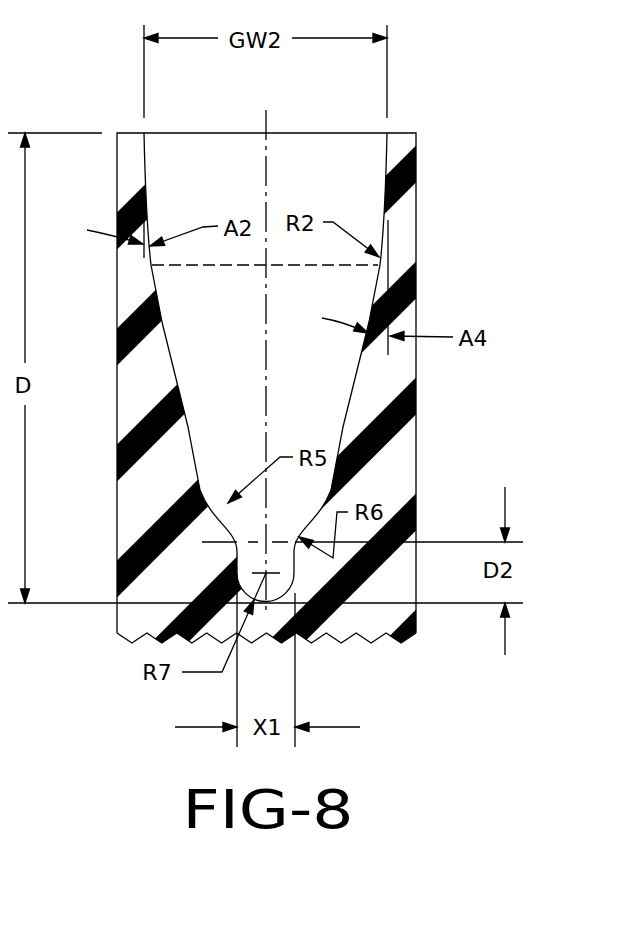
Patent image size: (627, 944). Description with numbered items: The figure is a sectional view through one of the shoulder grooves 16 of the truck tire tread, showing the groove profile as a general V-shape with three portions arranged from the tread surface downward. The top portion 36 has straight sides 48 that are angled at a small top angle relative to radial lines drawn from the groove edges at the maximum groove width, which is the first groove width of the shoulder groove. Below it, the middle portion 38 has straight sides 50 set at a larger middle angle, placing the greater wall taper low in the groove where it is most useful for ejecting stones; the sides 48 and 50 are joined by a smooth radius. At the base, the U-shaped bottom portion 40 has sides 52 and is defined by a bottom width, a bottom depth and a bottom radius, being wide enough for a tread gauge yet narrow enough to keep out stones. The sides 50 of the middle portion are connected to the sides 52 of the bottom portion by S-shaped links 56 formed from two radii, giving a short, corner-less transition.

The shoulder groove 16 is at (205, 118).
The top portion 36 is at (447, 210).
The middle portion 38 is at (448, 408).
The bottom portion 40 is at (537, 573).
The straight side of top portion 48 is at (148, 200).
The straight side of middle portion 50 is at (188, 428).
The side of bottom portion 52 is at (300, 563).
The S-shaped link 56 is at (218, 536).